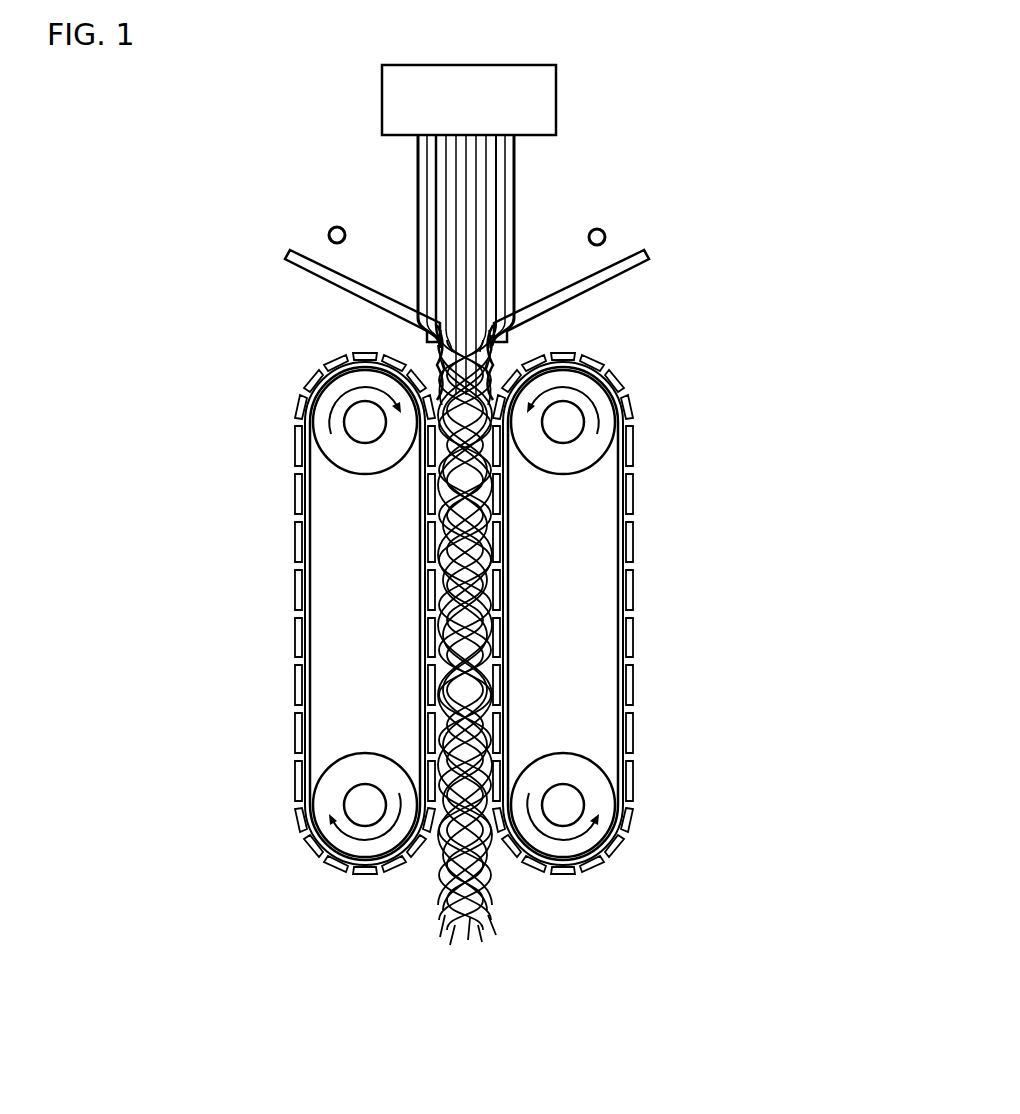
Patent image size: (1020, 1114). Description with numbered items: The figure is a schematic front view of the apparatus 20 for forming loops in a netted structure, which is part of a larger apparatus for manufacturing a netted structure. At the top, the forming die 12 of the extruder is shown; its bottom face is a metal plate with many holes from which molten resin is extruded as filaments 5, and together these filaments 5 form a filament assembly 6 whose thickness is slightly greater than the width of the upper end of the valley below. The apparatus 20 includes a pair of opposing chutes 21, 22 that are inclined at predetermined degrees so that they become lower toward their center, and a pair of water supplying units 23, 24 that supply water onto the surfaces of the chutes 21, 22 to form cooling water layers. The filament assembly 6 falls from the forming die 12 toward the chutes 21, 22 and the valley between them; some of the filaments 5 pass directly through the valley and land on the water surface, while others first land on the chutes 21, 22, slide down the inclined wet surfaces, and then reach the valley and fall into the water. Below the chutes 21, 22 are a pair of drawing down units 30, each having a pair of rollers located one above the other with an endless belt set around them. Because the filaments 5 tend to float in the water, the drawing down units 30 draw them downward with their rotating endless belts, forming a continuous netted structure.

The filaments 5 is at (515, 208).
The filament assembly 6 is at (437, 208).
The forming die 12 is at (556, 100).
The apparatus for forming loops in a netted structure 20 is at (445, 250).
The chute 21 is at (337, 287).
The chute 22 is at (623, 280).
The water supplying unit 23 is at (332, 226).
The water supplying unit 24 is at (603, 228).
The drawing down unit 30 is at (295, 622).